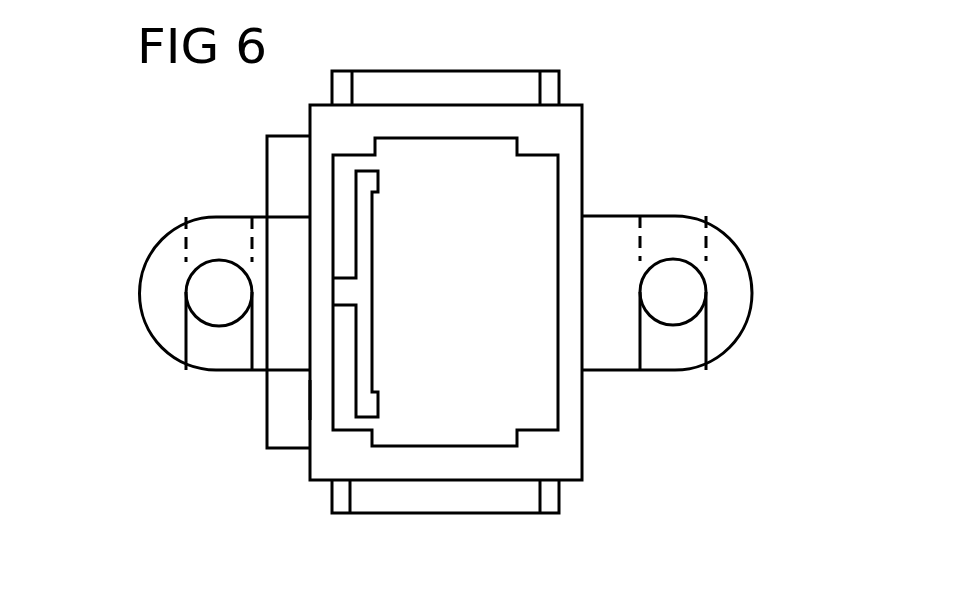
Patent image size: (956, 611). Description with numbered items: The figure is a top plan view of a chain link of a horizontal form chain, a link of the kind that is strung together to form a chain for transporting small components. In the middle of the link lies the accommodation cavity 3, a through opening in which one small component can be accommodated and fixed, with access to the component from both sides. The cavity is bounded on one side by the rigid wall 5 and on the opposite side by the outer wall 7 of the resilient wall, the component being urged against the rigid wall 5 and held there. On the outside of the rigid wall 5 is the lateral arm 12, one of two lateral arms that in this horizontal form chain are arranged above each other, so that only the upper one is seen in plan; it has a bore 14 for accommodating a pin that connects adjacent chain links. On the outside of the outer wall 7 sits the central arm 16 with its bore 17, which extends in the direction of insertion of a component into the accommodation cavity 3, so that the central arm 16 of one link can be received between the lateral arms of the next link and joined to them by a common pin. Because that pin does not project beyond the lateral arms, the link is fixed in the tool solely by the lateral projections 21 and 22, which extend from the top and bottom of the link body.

The accommodation cavity 3 is at (464, 312).
The rigid wall 5 is at (570, 182).
The outer wall 7 is at (318, 397).
The lateral arm 12 is at (728, 290).
The bore 14 is at (669, 278).
The central arm 16 is at (160, 297).
The bore 17 is at (215, 278).
The lateral projection 21 is at (458, 88).
The lateral projection 22 is at (458, 497).